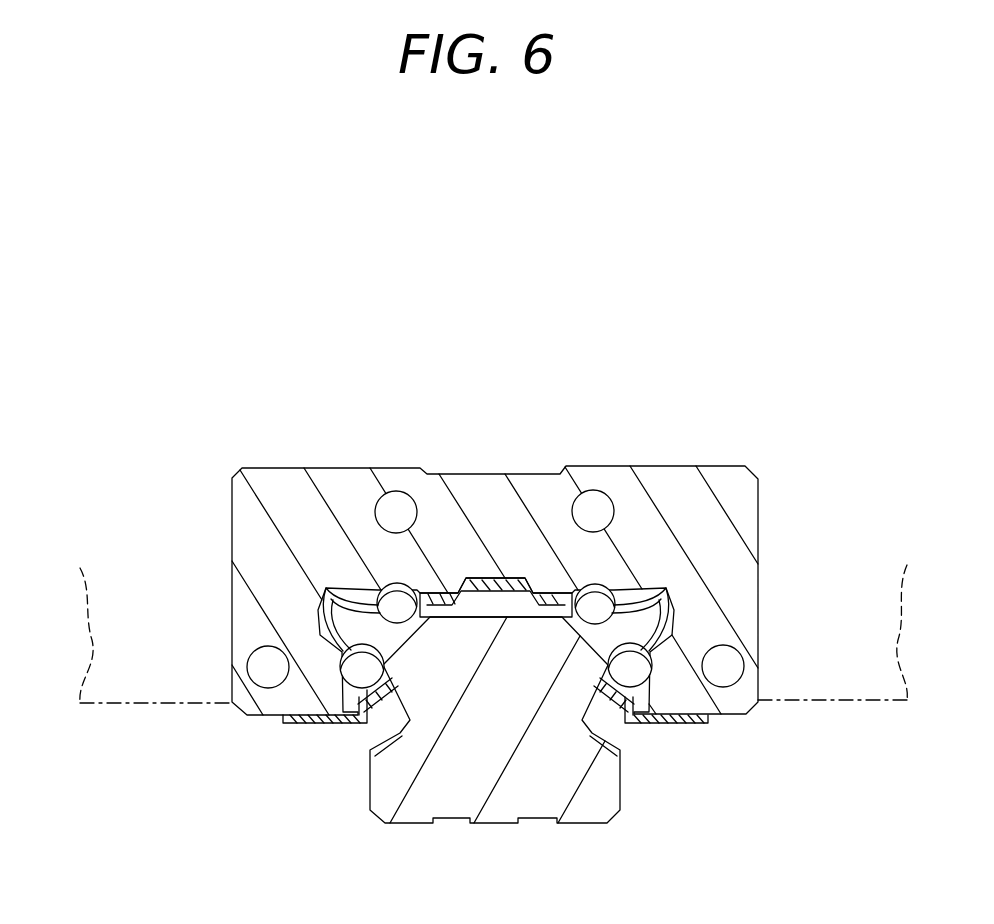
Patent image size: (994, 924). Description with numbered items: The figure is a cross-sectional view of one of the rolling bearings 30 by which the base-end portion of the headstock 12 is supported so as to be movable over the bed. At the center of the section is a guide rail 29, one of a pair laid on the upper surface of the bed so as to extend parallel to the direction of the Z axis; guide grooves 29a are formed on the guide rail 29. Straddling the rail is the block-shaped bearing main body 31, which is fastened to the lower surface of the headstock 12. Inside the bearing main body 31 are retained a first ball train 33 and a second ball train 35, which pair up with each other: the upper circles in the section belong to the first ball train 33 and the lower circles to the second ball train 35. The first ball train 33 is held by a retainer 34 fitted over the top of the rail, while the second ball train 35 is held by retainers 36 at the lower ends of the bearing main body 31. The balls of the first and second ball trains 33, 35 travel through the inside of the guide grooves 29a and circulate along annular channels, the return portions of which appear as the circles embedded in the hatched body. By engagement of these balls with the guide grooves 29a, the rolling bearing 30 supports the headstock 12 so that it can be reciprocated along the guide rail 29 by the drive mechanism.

The headstock 12 is at (840, 703).
The guide rail 29 is at (487, 823).
The guide groove 29a is at (628, 558).
The rolling bearing 30 is at (490, 470).
The bearing main body 31 is at (727, 471).
The first ball train 33 is at (592, 600).
The retainer 34 is at (492, 578).
The second ball train 35 is at (639, 686).
The retainer 36 is at (698, 725).